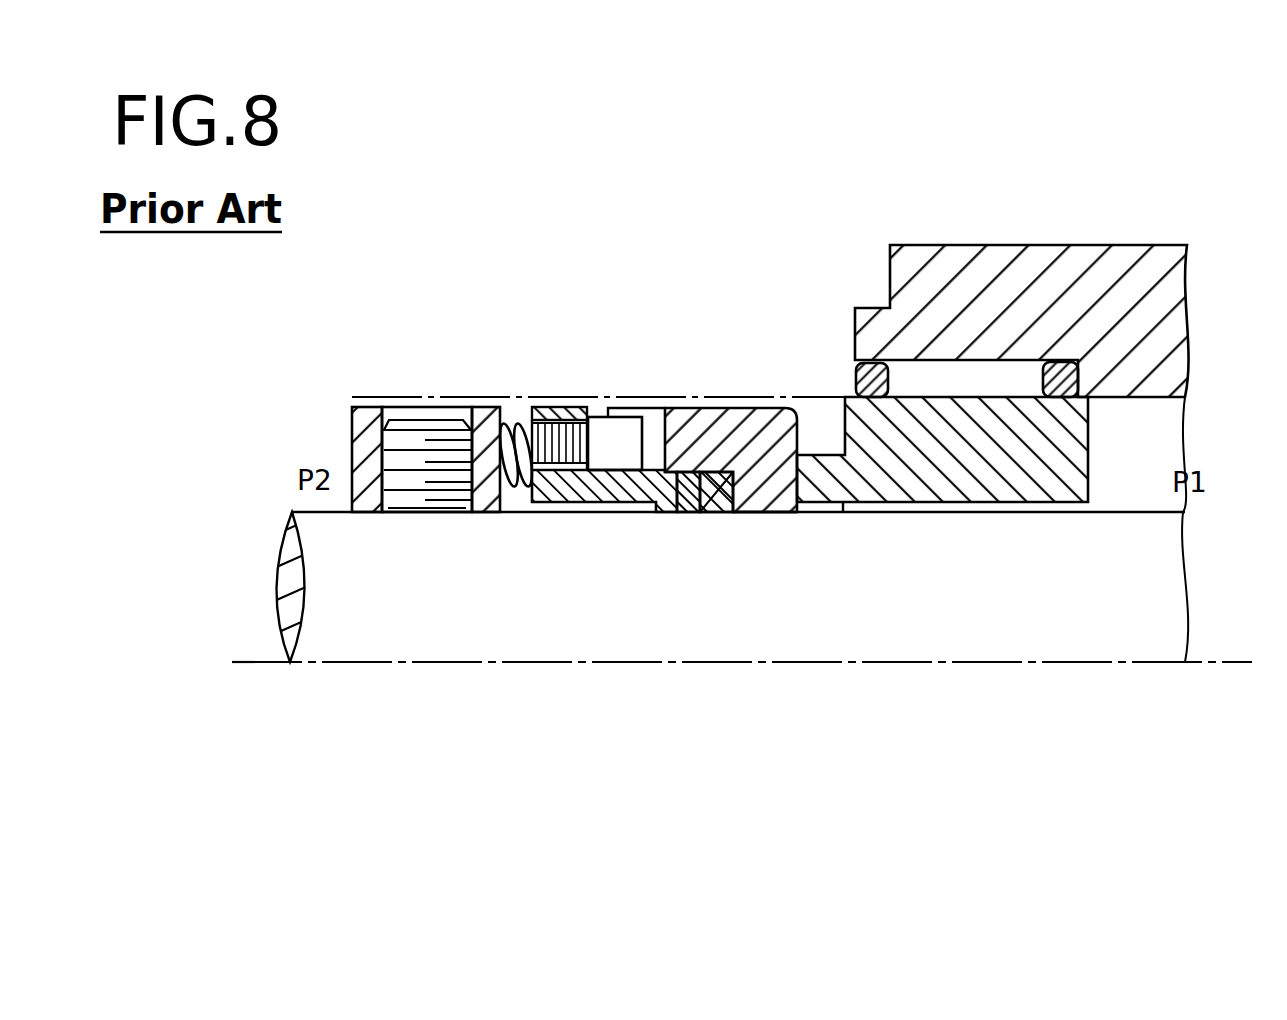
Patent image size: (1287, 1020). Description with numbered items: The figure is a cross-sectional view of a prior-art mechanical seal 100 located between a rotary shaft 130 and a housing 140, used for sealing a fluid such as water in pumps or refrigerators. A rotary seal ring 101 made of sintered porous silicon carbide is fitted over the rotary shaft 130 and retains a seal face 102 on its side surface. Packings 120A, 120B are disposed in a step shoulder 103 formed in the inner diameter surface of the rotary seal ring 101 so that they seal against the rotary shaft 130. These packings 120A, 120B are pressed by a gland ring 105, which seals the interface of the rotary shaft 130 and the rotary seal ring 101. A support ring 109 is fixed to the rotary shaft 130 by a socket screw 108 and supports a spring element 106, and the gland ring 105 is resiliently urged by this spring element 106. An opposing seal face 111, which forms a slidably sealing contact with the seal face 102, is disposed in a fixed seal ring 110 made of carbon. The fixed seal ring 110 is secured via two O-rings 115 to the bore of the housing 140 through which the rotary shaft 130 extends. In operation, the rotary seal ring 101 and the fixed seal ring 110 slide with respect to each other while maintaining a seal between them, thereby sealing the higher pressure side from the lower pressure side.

The mechanical seal 100 is at (800, 330).
The rotary seal ring 101 is at (748, 425).
The seal face 102 is at (803, 412).
The step shoulder 103 is at (656, 465).
The gland ring 105 is at (663, 513).
The spring element 106 is at (508, 430).
The socket screw 108 is at (450, 437).
The support ring 109 is at (368, 412).
The fixed seal ring 110 is at (1062, 503).
The opposing seal face 111 is at (781, 495).
The O-ring 115 is at (851, 372).
The packing 120A is at (717, 513).
The packing 120B is at (687, 513).
The rotary shaft 130 is at (1102, 640).
The housing 140 is at (975, 278).